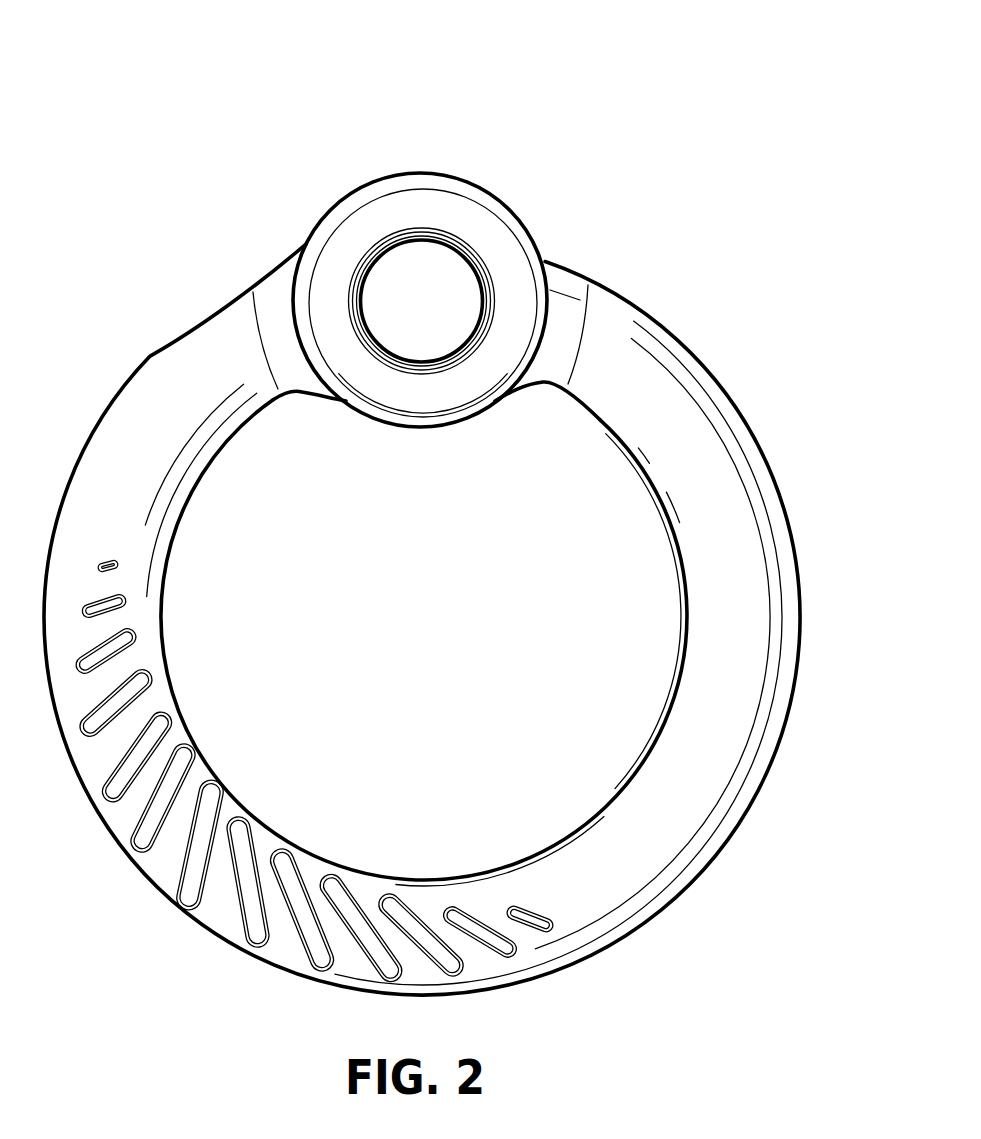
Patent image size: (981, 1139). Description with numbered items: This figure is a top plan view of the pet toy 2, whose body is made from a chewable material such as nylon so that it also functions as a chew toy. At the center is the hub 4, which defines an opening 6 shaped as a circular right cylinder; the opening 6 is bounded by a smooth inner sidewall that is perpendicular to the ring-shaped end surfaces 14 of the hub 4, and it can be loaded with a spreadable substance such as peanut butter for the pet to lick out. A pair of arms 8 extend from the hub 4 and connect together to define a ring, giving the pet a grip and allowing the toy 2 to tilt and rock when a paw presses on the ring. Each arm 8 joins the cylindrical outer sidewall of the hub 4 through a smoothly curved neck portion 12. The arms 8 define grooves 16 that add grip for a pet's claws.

The pet toy 2 is at (627, 115).
The hub 4 is at (446, 185).
The opening 6 is at (427, 279).
The arms 8 is at (197, 382).
The neck portion 12 is at (552, 273).
The end surfaces 14 is at (393, 217).
The grooves 16 is at (202, 857).